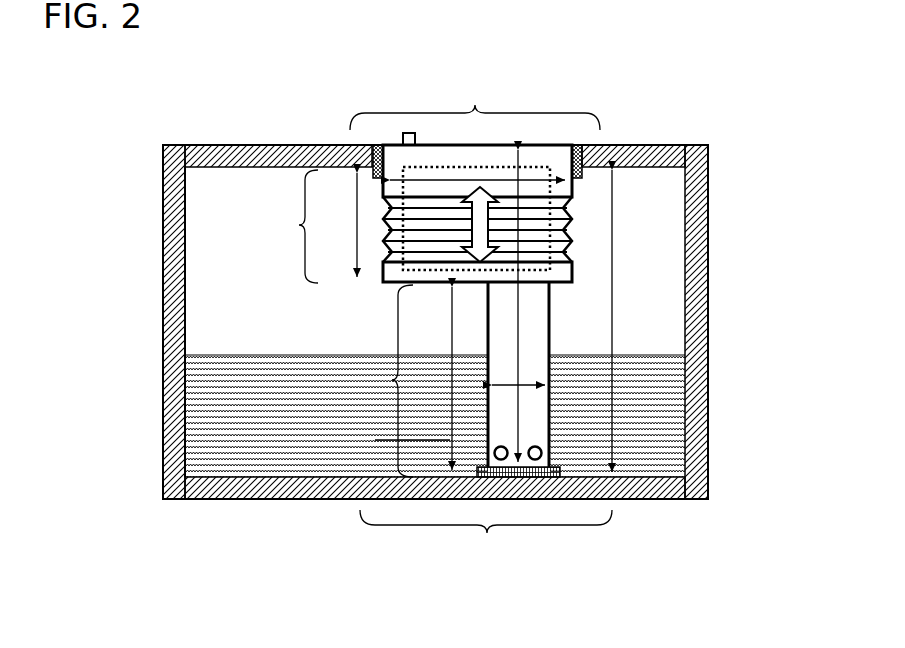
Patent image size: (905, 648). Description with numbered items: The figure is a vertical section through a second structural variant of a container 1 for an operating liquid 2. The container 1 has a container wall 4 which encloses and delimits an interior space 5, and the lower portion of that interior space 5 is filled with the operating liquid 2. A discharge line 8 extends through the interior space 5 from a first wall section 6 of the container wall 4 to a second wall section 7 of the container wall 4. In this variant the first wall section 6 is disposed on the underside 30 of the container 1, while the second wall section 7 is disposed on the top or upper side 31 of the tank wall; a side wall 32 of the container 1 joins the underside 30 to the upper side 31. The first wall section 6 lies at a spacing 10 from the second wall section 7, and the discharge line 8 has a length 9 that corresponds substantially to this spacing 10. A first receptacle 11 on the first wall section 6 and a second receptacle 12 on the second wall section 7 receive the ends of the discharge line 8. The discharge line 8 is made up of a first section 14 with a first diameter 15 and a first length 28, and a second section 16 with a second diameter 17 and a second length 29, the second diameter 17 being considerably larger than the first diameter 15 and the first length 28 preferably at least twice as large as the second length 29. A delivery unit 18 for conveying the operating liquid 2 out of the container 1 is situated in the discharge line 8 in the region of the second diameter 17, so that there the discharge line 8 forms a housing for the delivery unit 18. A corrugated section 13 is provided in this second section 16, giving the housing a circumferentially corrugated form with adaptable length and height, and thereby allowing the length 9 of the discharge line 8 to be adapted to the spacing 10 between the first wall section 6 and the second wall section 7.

The container 1 is at (164, 100).
The operating liquid 2 is at (233, 375).
The container wall 4 is at (163, 283).
The interior space 5 is at (687, 245).
The first wall section 6 is at (487, 533).
The second wall section 7 is at (475, 112).
The discharge line 8 is at (507, 313).
The length 9 is at (518, 342).
The spacing 10 is at (612, 292).
The first receptacle 11 is at (565, 478).
The second receptacle 12 is at (573, 145).
The corrugated section 13 is at (383, 242).
The first section 14 is at (395, 380).
The first diameter 15 is at (527, 385).
The second section 16 is at (300, 225).
The second diameter 17 is at (538, 200).
The delivery unit 18 is at (448, 167).
The first length 28 is at (375, 440).
The second length 29 is at (352, 208).
The underside 30 is at (213, 500).
The upper side 31 is at (272, 145).
The side wall 32 is at (163, 375).